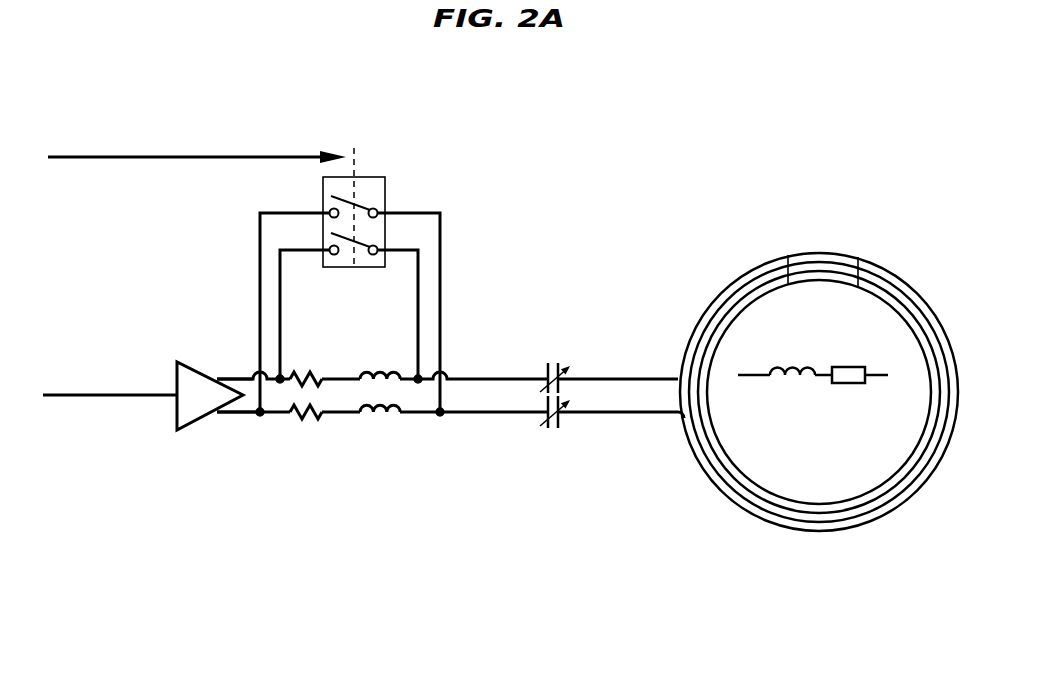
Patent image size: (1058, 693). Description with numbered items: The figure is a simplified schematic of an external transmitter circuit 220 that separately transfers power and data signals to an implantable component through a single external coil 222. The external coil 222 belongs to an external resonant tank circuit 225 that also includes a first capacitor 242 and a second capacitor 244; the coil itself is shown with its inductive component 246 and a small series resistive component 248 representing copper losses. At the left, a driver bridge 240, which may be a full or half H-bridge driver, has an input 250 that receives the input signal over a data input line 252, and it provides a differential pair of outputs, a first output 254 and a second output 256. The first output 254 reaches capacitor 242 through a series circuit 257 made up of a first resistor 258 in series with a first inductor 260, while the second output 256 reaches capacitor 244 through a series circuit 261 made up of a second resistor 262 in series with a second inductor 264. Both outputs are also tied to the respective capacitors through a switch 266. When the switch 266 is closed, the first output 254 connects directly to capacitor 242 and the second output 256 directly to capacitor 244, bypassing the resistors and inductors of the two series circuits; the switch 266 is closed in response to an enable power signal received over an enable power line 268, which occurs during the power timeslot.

The transmitter circuit 220 is at (502, 101).
The external coil 222 is at (812, 531).
The external resonant tank circuit 225 is at (674, 243).
The driver bridge 240 is at (190, 425).
The capacitor 242 is at (557, 359).
The capacitor 244 is at (557, 431).
The inductive component 246 is at (783, 382).
The series resistive component 248 is at (851, 384).
The input 250 is at (176, 372).
The data input line 252 is at (100, 398).
The first output 254 is at (213, 378).
The second output 256 is at (226, 420).
The series circuit 257 is at (399, 316).
The resistor 258 is at (310, 371).
The inductor 260 is at (362, 360).
The series circuit 261 is at (412, 460).
The resistor 262 is at (307, 424).
The inductor 264 is at (373, 417).
The switch 266 is at (386, 190).
The enable power line 268 is at (224, 155).